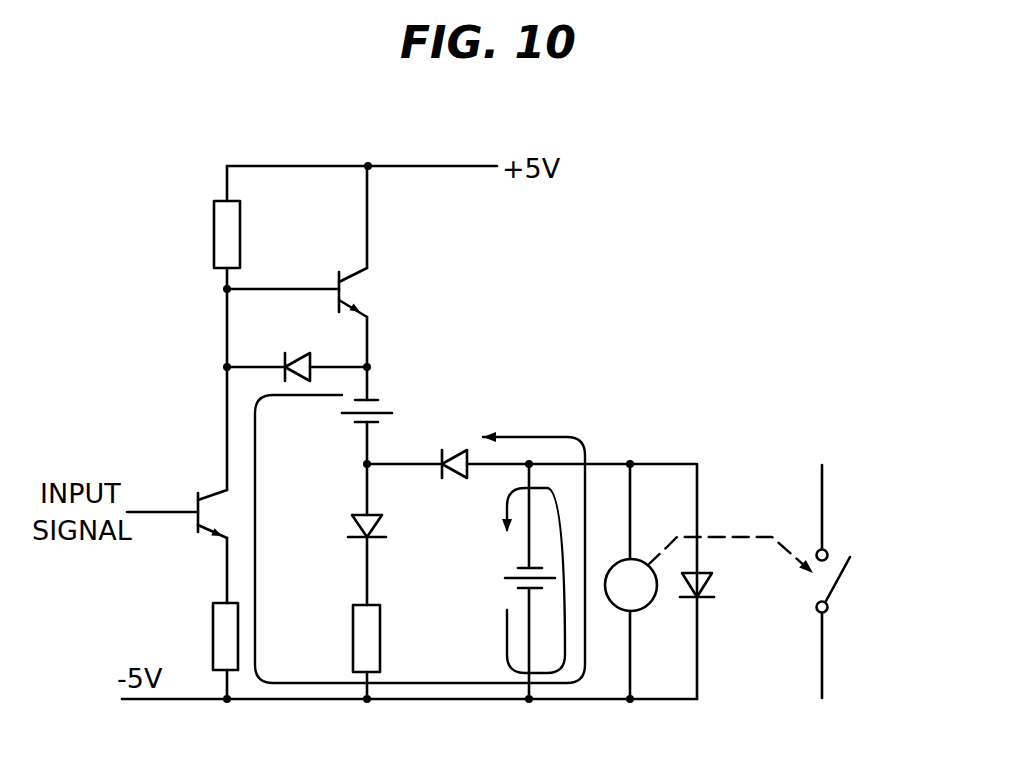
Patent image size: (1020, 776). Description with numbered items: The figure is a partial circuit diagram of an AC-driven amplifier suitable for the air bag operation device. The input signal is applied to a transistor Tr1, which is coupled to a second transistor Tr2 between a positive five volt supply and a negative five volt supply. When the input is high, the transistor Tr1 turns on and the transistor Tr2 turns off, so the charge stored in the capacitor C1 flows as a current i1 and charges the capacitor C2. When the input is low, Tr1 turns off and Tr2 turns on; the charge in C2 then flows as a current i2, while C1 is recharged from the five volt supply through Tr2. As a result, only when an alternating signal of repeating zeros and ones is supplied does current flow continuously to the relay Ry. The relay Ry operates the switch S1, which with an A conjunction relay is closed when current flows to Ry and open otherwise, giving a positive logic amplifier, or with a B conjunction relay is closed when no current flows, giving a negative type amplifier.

The transistor Tr1 is at (200, 528).
The transistor Tr2 is at (358, 272).
The capacitor C1 is at (390, 412).
The capacitor C2 is at (512, 581).
The relay Ry is at (631, 581).
The switch S1 is at (850, 581).
The current i1 is at (420, 539).
The current i2 is at (521, 580).